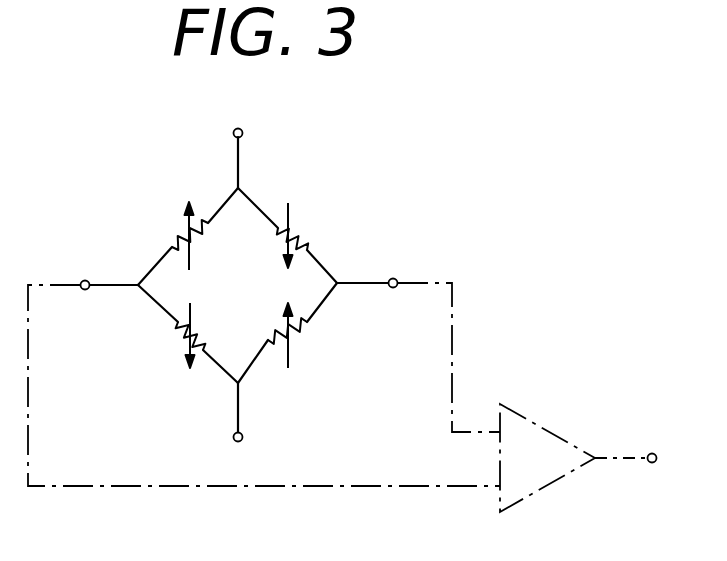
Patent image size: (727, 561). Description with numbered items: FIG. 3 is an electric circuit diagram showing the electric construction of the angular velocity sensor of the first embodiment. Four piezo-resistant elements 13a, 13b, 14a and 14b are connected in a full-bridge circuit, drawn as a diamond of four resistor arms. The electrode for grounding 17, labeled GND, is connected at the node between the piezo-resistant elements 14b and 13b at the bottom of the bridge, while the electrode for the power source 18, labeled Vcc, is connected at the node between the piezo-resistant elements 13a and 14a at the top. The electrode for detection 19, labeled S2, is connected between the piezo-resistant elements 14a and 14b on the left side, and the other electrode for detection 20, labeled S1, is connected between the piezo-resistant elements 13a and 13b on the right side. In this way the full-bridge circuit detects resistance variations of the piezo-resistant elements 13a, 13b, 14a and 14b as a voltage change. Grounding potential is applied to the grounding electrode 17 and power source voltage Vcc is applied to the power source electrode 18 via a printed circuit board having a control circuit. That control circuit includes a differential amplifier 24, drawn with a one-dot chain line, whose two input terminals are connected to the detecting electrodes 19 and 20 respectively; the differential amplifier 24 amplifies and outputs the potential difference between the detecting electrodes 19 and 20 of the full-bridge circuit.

The piezo-resistant element 13a is at (298, 238).
The piezo-resistant element 13b is at (290, 336).
The piezo-resistant element 14a is at (186, 238).
The piezo-resistant element 14b is at (182, 332).
The electrode for grounding 17 is at (243, 437).
The electrode for the power source 18 is at (233, 133).
The electrode for detection 19 is at (85, 280).
The electrode for detection 20 is at (398, 279).
The differential amplifier 24 is at (547, 485).